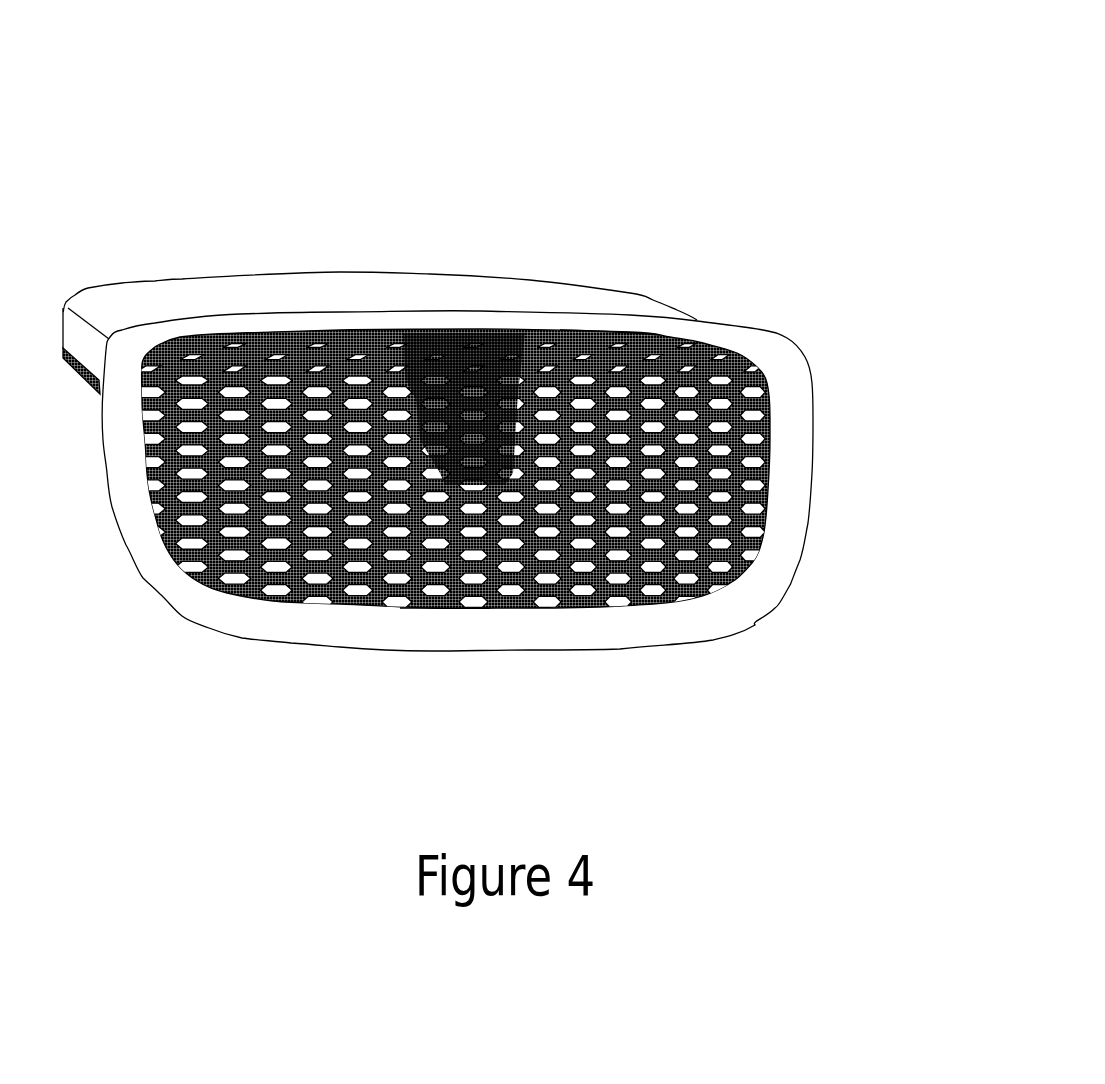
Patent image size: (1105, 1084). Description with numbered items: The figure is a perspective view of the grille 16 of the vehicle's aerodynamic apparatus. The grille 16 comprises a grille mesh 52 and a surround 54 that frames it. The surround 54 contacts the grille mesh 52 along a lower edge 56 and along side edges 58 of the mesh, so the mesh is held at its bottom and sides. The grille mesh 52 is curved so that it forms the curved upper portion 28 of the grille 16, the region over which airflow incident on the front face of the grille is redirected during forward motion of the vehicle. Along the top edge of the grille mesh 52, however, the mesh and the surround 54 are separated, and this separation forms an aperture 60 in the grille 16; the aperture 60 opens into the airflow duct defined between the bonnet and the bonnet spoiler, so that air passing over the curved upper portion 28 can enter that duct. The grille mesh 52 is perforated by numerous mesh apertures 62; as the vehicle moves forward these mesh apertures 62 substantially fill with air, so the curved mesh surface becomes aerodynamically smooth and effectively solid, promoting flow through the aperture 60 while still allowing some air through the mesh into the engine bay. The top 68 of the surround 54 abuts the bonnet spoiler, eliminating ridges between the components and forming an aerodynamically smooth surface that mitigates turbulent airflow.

The grille 16 is at (570, 444).
The curved upper portion 28 is at (722, 362).
The grille mesh 52 is at (743, 555).
The surround 54 is at (372, 242).
The lower edge 56 is at (445, 608).
The side edges 58 is at (770, 457).
The aperture 60 is at (642, 333).
The mesh apertures 62 is at (277, 545).
The top of surround 68 is at (415, 288).